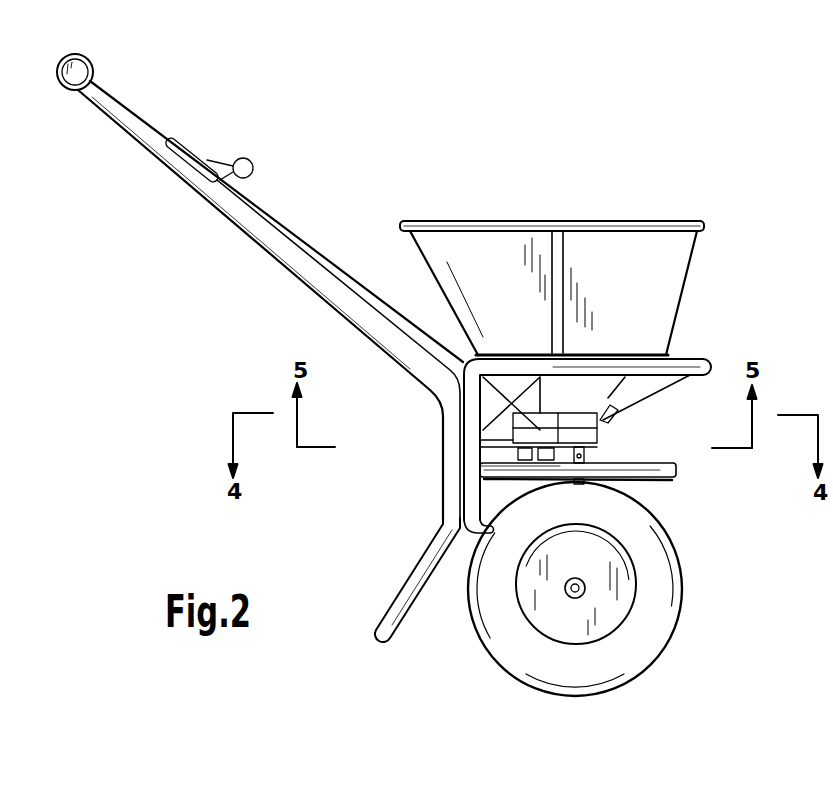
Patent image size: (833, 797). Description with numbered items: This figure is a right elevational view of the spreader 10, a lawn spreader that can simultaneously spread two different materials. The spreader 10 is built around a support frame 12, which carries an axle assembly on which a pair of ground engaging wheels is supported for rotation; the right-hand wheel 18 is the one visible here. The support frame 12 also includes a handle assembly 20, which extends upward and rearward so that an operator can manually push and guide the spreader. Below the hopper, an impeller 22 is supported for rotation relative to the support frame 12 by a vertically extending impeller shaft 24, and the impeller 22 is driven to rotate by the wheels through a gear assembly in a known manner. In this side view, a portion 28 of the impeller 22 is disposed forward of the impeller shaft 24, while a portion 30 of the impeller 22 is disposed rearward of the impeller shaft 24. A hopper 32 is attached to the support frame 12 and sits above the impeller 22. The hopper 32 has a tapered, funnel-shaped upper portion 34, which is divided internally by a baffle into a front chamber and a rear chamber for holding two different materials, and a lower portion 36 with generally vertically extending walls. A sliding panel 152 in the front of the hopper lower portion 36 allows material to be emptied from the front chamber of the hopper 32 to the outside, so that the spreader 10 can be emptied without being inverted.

The spreader 10 is at (167, 264).
The support frame 12 is at (440, 513).
The ground engaging wheel 18 is at (680, 574).
The handle assembly 20 is at (146, 118).
The impeller 22 is at (572, 469).
The impeller shaft 24 is at (592, 456).
The portion of the impeller 28 is at (653, 462).
The portion of the impeller 30 is at (487, 472).
The hopper 32 is at (594, 249).
The upper portion 34 is at (688, 280).
The lower portion 36 is at (605, 445).
The sliding panel 152 is at (605, 412).